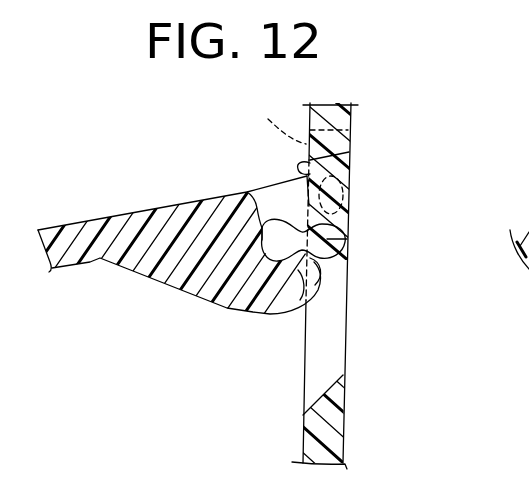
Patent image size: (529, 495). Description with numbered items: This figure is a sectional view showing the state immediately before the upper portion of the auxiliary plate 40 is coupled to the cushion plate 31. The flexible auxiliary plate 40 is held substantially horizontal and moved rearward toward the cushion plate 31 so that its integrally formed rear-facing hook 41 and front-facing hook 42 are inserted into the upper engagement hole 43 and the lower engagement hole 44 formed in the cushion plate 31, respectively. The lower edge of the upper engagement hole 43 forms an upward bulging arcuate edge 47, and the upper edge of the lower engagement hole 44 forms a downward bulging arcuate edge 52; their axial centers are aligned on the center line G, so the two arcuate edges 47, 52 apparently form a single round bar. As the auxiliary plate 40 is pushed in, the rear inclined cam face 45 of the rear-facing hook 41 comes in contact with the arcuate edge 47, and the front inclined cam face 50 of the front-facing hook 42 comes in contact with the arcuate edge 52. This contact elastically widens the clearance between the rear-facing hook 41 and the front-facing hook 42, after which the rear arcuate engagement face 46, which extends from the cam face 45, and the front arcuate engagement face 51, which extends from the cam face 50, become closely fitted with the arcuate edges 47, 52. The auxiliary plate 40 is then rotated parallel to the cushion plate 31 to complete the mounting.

The auxiliary plate 40 is at (88, 222).
The front-facing hook 42 is at (258, 307).
The front arcuate engagement face 51 is at (261, 228).
The rear arcuate engagement face 46 is at (277, 224).
The lower engagement hole 44 is at (318, 363).
The rear-facing hook 41 is at (350, 152).
The cushion plate 31 is at (343, 425).
The upper engagement hole 43 is at (276, 120).
The rear inclined cam face 45 is at (350, 211).
The upward bulging arcuate edge 47 is at (349, 214).
The center line G is at (349, 242).
The downward bulging arcuate edge 52 is at (322, 258).
The front inclined cam face 50 is at (326, 268).